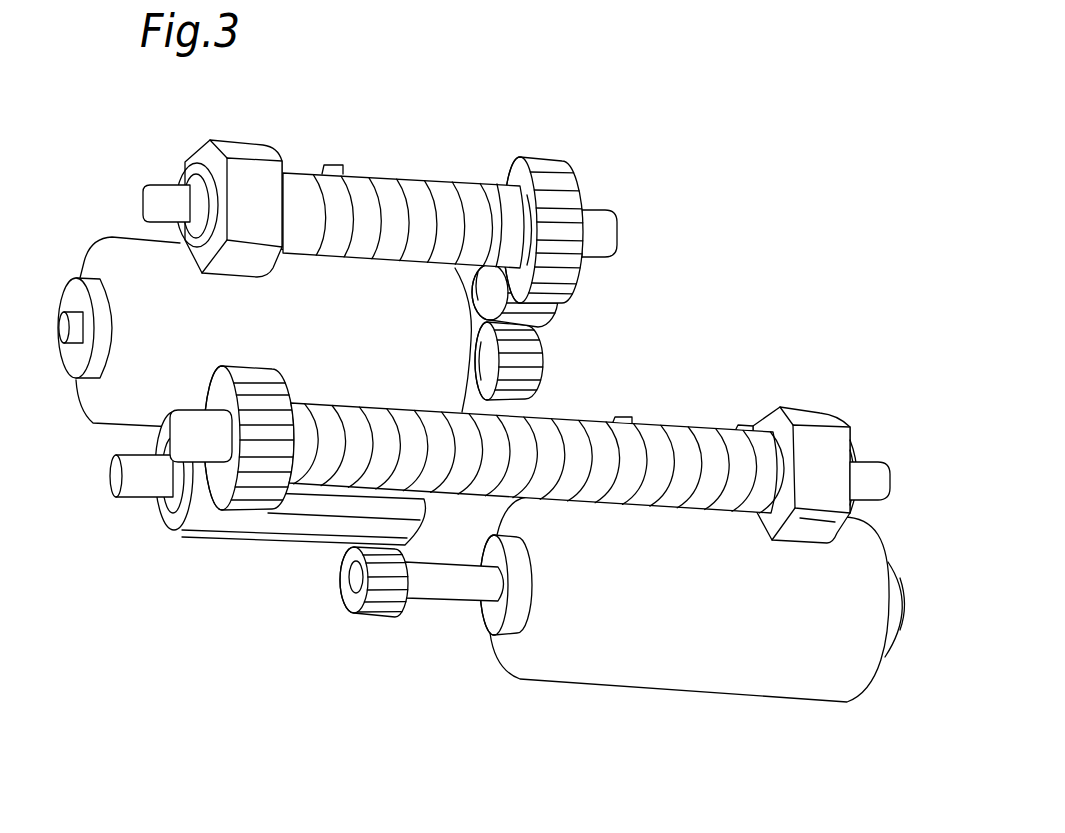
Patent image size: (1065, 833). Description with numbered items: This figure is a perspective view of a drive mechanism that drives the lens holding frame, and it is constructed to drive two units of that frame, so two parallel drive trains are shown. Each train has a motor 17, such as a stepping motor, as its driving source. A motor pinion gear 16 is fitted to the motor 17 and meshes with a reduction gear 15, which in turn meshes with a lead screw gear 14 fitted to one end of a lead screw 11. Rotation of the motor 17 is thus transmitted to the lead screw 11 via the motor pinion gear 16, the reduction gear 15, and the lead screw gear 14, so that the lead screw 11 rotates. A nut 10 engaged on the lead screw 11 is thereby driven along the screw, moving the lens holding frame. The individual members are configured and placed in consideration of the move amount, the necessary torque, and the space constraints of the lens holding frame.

The nut 10 is at (237, 167).
The lead screw 11 is at (385, 193).
The lead screw gear 14 is at (560, 183).
The reduction gear 15 is at (540, 310).
The motor pinion gear 16 is at (522, 355).
The motor 17 is at (121, 403).